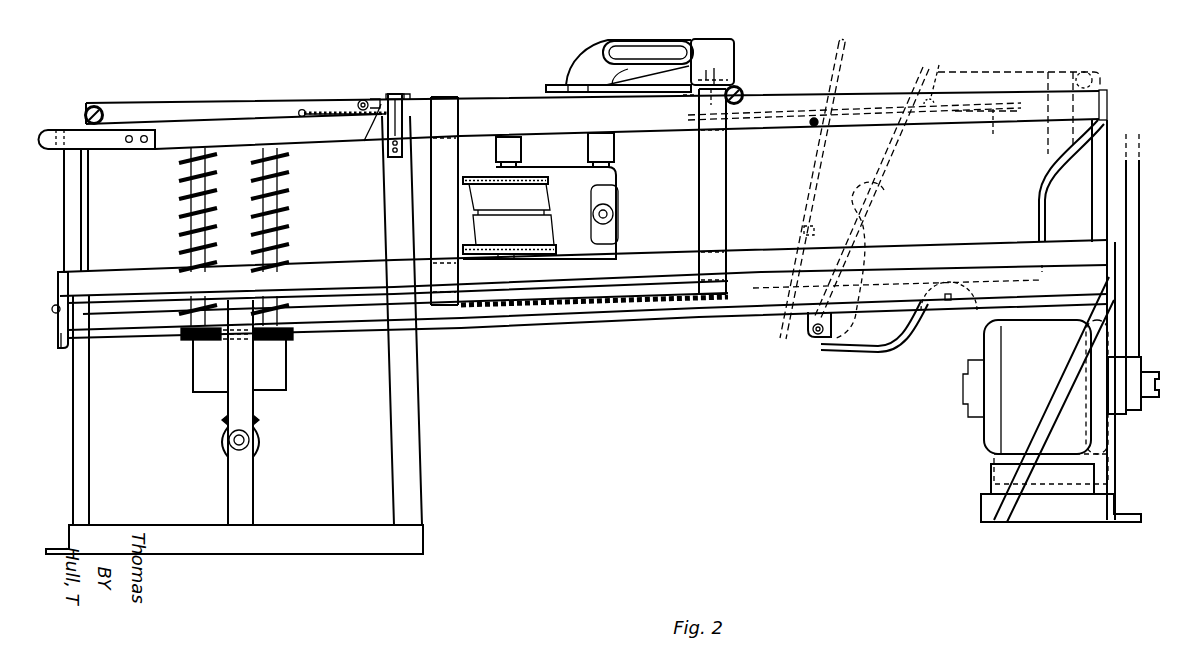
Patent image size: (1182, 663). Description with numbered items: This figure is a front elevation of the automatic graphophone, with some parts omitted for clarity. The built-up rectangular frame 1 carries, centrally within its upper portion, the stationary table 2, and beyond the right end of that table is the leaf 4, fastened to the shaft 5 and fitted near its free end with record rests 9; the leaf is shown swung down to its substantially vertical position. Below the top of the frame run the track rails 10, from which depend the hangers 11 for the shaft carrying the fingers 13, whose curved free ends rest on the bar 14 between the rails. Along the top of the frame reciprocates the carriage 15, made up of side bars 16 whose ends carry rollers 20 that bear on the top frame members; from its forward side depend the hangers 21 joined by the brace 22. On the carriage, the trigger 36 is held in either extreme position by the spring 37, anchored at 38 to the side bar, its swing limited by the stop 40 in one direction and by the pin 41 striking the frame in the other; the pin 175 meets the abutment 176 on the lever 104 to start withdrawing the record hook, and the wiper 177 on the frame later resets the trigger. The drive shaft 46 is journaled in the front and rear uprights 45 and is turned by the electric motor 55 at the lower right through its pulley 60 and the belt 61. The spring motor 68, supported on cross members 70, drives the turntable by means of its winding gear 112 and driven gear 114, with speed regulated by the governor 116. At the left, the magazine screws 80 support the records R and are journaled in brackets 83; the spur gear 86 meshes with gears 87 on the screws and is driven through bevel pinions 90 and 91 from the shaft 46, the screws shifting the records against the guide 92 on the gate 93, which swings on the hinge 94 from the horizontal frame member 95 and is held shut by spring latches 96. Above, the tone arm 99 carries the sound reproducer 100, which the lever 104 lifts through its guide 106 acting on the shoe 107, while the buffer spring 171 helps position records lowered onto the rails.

The frame 1 is at (414, 440).
The stationary table 2 is at (733, 126).
The leaf 4 is at (910, 117).
The shaft 5 is at (804, 119).
The record rests 9 is at (939, 75).
The rails 10 is at (733, 294).
The hangers 11 is at (801, 312).
The fingers 13 is at (860, 209).
The bar 14 is at (945, 296).
The carriage 15 is at (262, 93).
The side bars 16 is at (478, 92).
The rollers 20 is at (89, 99).
The hangers 21 is at (728, 167).
The brace 22 is at (575, 288).
The trigger 36 is at (390, 86).
The spring 37 is at (333, 107).
The spring anchorage 38 is at (296, 110).
The stop 40 is at (357, 92).
The pin 41 is at (357, 134).
The uprights 45 is at (240, 476).
The shaft 46 is at (253, 432).
The electric motor 55 is at (1035, 402).
The pulley 60 is at (1126, 359).
The belt 61 is at (1130, 232).
The spring motor 68 is at (539, 213).
The cross members 70 is at (580, 142).
The screws 80 is at (171, 210).
The brackets 83 is at (280, 381).
The spur gear 86 is at (246, 334).
The gears 87 is at (175, 333).
The bevel pinions 90 is at (213, 412).
The bevel pinions 91 is at (210, 437).
The guide 92 is at (82, 182).
The gate 93 is at (53, 264).
The hinge 94 is at (45, 304).
The horizontal frame member 95 is at (56, 337).
The spring latches 96 is at (61, 119).
The tone arm 99 is at (585, 47).
The sound reproducer 100 is at (709, 31).
The lever 104 is at (553, 77).
The guide 106 is at (626, 75).
The shoe 107 is at (688, 68).
The gear 112 is at (490, 236).
The gear 114 is at (493, 177).
The governor 116 is at (612, 206).
The buffer spring 171 is at (1030, 189).
The pin 175 is at (354, 93).
The abutment 176 is at (681, 94).
The wiper 177 is at (401, 90).
The records R is at (833, 61).